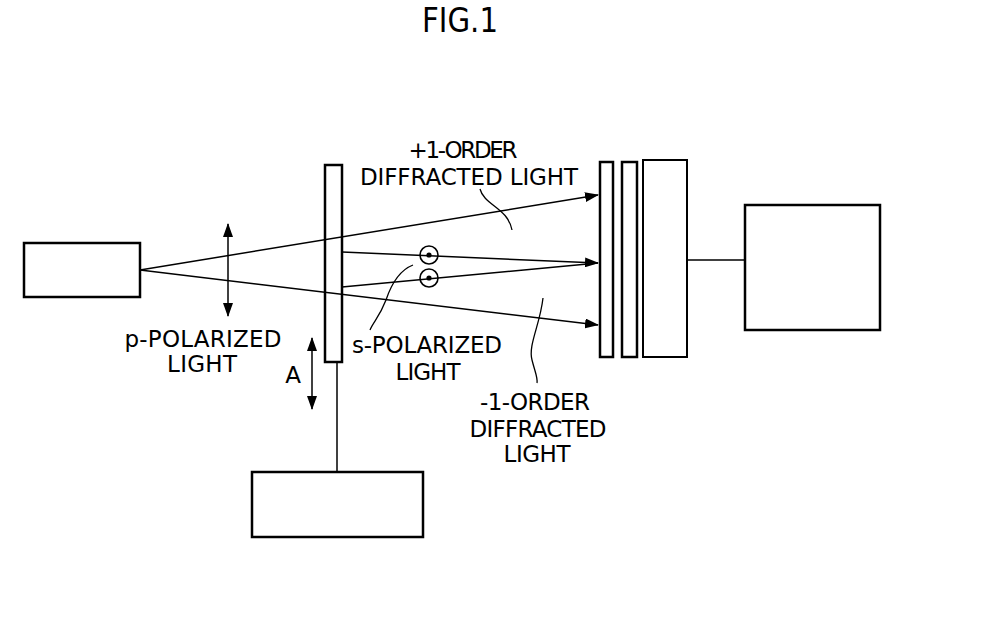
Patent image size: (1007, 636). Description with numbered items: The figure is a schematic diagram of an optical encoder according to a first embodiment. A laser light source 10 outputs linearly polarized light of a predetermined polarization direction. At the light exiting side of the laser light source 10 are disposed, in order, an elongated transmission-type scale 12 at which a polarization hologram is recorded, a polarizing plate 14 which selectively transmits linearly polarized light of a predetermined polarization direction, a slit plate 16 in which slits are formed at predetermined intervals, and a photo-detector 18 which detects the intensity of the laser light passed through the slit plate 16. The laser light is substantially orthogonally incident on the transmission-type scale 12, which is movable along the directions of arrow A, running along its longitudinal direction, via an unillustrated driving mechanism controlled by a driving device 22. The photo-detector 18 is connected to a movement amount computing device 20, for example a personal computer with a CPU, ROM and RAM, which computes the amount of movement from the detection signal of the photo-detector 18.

The laser light source 10 is at (79, 243).
The transmission-type scale 12 is at (328, 165).
The polarizing plate 14 is at (598, 162).
The slit plate 16 is at (628, 357).
The photo-detector 18 is at (687, 335).
The movement amount computing device 20 is at (770, 205).
The driving device 22 is at (401, 472).